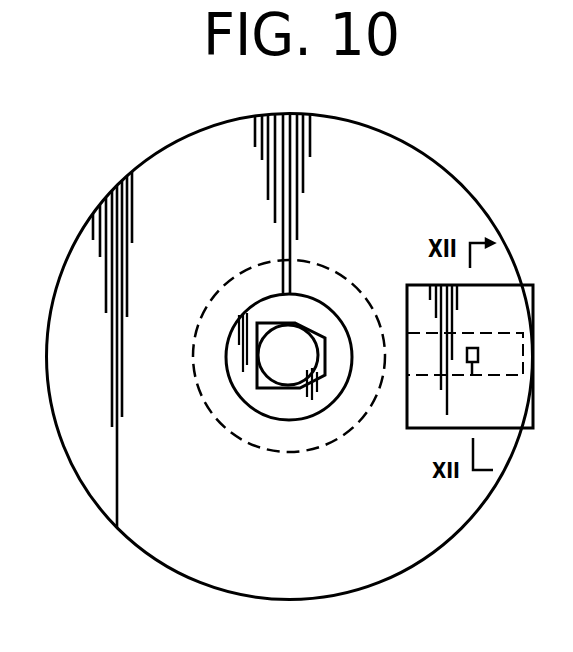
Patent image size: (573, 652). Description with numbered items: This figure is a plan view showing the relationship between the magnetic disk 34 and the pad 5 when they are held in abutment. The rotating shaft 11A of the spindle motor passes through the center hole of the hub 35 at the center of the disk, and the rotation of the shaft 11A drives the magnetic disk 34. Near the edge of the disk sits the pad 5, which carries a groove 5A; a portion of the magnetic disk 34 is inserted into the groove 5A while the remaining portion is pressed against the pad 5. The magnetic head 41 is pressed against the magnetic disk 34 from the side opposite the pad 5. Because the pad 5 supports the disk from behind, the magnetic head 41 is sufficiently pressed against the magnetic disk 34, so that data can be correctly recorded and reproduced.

The magnetic disk 34 is at (486, 506).
The hub 35 is at (245, 362).
The rotating shaft 11A is at (293, 370).
The pad 5 is at (425, 413).
The groove 5A is at (423, 342).
The magnetic head 41 is at (473, 377).